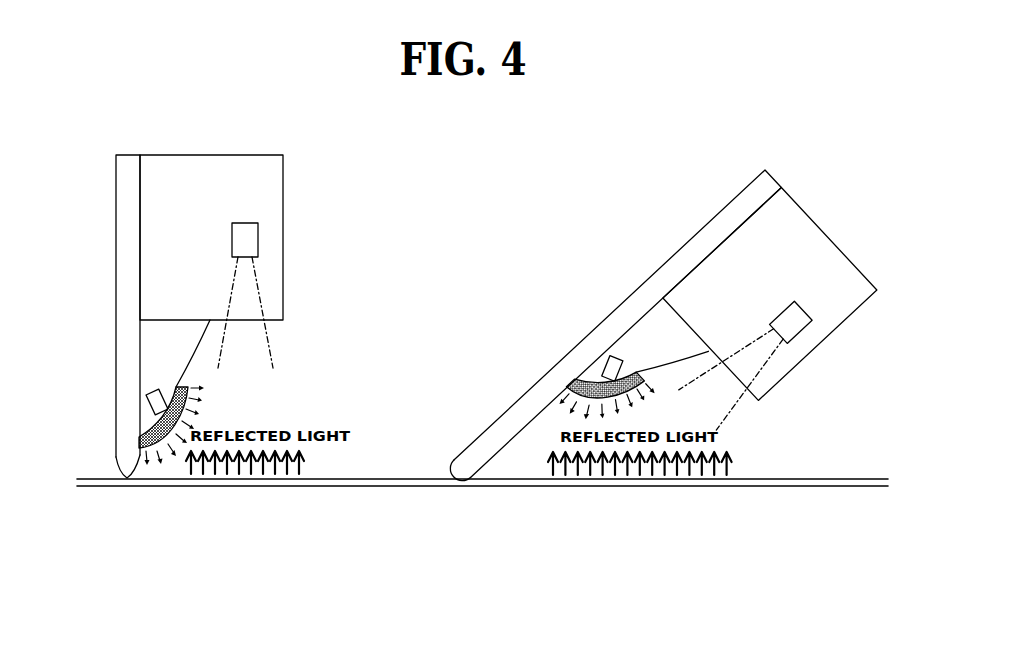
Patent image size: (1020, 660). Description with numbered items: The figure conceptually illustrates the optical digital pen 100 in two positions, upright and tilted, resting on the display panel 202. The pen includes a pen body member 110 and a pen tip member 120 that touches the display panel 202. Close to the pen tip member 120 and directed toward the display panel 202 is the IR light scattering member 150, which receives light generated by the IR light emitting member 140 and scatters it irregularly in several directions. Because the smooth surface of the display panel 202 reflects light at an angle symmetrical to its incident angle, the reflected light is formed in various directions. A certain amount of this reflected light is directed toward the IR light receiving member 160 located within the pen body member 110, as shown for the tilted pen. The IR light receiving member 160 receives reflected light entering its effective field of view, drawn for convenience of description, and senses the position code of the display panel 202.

The optical digital pen 100 is at (106, 223).
The pen body member 110 is at (283, 237).
The pen tip member 120 is at (121, 454).
The IR light emitting member 140 is at (148, 399).
The IR light scattering member 150 is at (172, 386).
The IR light receiving member 160 is at (519, 315).
The display panel 202 is at (372, 492).